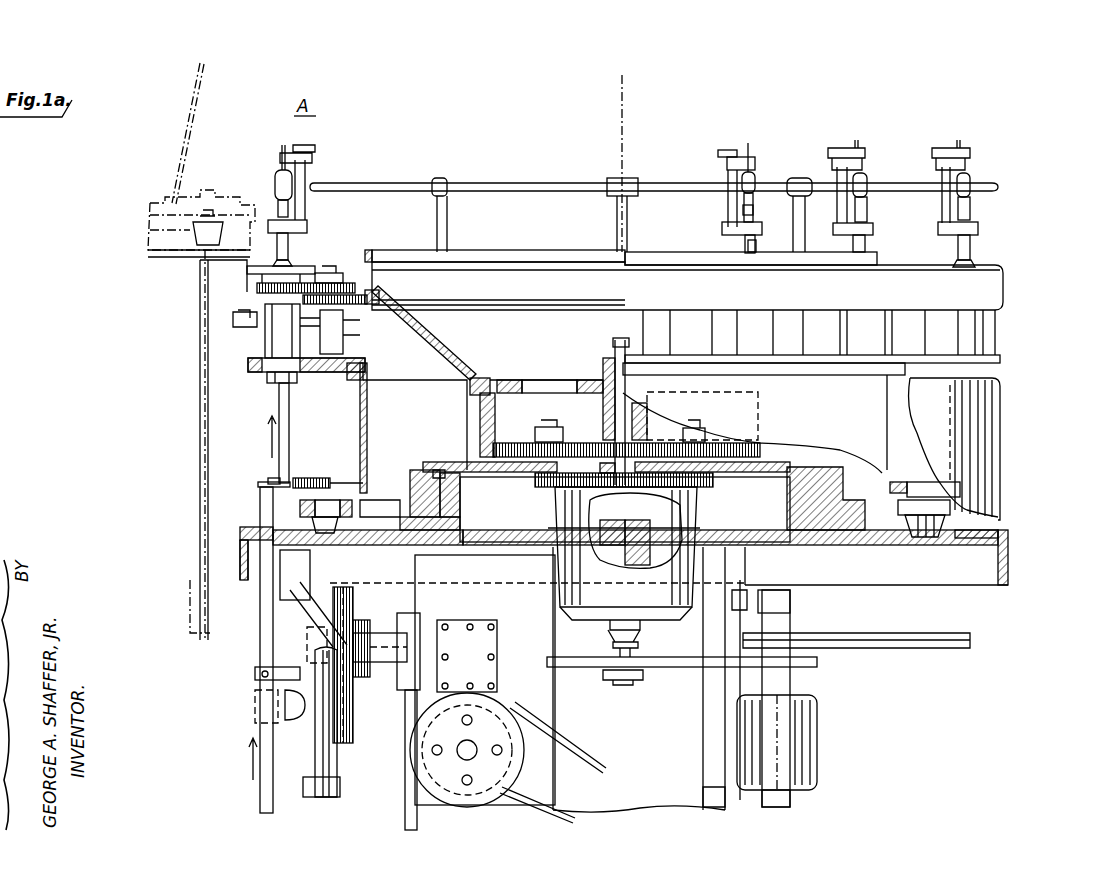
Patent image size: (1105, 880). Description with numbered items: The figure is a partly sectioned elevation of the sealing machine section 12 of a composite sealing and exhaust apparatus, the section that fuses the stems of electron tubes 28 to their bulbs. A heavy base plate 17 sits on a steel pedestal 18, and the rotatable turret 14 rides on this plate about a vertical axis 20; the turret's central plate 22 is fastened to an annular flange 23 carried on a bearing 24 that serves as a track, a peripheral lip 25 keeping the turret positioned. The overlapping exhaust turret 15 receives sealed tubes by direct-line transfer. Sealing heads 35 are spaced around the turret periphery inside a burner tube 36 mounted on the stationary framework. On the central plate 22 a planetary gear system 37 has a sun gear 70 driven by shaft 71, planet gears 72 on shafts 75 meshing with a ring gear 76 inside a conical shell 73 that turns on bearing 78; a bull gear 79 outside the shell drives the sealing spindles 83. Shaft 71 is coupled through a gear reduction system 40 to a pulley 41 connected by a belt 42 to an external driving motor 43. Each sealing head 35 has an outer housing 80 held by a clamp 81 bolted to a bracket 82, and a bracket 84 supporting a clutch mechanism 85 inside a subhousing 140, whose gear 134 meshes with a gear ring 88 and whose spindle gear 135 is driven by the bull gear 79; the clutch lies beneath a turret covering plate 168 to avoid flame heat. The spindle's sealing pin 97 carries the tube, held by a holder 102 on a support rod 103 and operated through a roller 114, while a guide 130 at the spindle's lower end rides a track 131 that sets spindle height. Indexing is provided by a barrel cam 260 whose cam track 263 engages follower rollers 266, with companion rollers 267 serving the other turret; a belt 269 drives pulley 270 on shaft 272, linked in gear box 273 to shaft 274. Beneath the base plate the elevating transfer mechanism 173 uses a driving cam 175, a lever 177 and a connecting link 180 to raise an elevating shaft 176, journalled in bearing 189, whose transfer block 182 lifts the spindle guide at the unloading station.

The machine section 12 is at (1038, 428).
The rotatable turret 14 is at (1036, 294).
The rotatable turret 15 is at (192, 120).
The base plate 17 is at (388, 546).
The steel pedestal 18 is at (710, 730).
The vertical axis 20 is at (625, 98).
The central plate 22 is at (452, 462).
The annular flange 23 is at (410, 486).
The bearing 24 is at (458, 528).
The peripheral lip 25 is at (462, 498).
The electron tube 28 is at (764, 157).
The sealing head 35 is at (332, 161).
The burner tube 36 is at (557, 183).
The planetary gear system 37 is at (478, 410).
The gear reduction system 40 is at (690, 525).
The pulley 41 is at (580, 668).
The belt 42 is at (716, 662).
The driving motor 43 is at (812, 744).
The sun gear 70 is at (605, 448).
The shaft 71 is at (610, 356).
The planet gears 72 is at (510, 447).
The conical shell 73 is at (435, 348).
The shaft 75 is at (548, 427).
The ring gear 76 is at (500, 433).
The bearing 78 is at (602, 376).
The bull gear 79 is at (390, 296).
The outer housing 80 is at (262, 335).
The clamp 81 is at (252, 373).
The bracket 82 is at (360, 428).
The sealing spindle 83 is at (290, 412).
The bracket 84 is at (303, 330).
The clutch mechanism 85 is at (345, 326).
The gear ring 88 is at (290, 283).
The sealing pin 97 is at (754, 212).
The holder 102 is at (726, 161).
The support rod 103 is at (728, 204).
The roller 114 is at (731, 148).
The guide 130 is at (264, 480).
The track 131 is at (331, 479).
The gear 134 is at (355, 292).
The spindle gear 135 is at (362, 296).
The subhousing 140 is at (322, 373).
The turret covering plate 168 is at (400, 252).
The elevating transfer mechanism 173 is at (253, 712).
The driving cam 175 is at (350, 608).
The elevating shaft 176 is at (258, 503).
The lever 177 is at (316, 622).
The connecting link 180 is at (305, 700).
The transfer block 182 is at (262, 483).
The bearing 189 is at (262, 718).
The indexing barrel cam 260 is at (622, 556).
The cam track 263 is at (560, 526).
The cam follower roller 266 is at (680, 530).
The cam follower roller 267 is at (216, 225).
The belt 269 is at (593, 770).
The pulley 270 is at (432, 787).
The shaft 272 is at (467, 745).
The gear box 273 is at (430, 692).
The shaft 274 is at (388, 660).